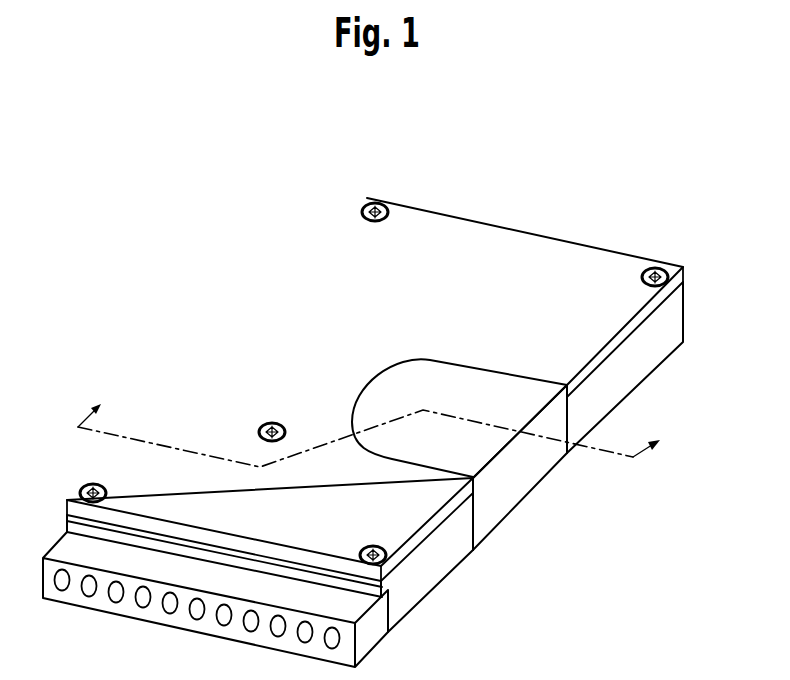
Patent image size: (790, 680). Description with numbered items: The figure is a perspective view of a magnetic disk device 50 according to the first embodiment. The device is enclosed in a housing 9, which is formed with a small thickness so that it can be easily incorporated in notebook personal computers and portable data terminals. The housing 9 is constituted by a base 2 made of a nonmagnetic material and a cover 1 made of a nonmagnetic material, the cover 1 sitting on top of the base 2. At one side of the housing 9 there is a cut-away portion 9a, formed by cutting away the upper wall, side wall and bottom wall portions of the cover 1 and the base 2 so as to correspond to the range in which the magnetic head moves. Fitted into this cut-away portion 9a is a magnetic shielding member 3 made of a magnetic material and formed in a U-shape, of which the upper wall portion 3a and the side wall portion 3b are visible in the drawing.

The magnetic disk device 50 is at (583, 226).
The cover 1 is at (222, 381).
The housing 9 is at (257, 296).
The cut-away portion 9a is at (477, 520).
The base 2 is at (645, 360).
The magnetic shielding member 3 is at (523, 463).
The upper wall portion 3a is at (440, 377).
The side wall portion 3b is at (498, 507).